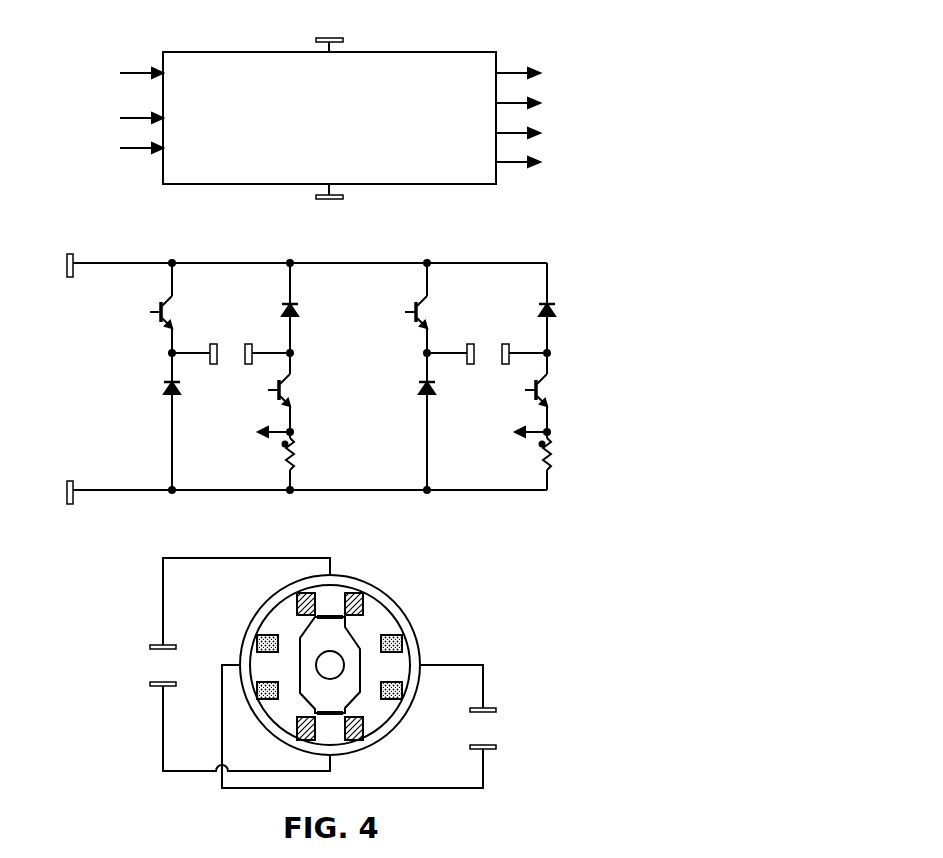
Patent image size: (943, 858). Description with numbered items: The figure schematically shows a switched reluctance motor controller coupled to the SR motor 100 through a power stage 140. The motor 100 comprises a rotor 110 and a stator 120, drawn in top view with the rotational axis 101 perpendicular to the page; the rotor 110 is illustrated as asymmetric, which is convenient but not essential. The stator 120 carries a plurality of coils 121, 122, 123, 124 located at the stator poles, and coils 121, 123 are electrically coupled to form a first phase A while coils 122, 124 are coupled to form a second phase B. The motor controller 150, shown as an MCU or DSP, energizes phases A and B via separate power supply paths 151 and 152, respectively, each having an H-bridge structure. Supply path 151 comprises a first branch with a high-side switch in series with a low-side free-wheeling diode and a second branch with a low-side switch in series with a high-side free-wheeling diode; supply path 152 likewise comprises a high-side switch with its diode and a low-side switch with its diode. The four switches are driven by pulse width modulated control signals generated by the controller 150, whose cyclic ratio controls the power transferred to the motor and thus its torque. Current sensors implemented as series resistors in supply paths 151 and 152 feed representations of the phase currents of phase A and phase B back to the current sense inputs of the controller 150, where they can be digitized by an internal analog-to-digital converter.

The SR motor 100 is at (317, 654).
The rotational axis 101 is at (330, 665).
The rotor 110 is at (320, 637).
The stator 120 is at (368, 588).
The coil 121 is at (305, 598).
The coil 122 is at (388, 638).
The coil 123 is at (352, 728).
The coil 124 is at (262, 688).
The power stage 140 is at (335, 398).
The motor controller 150 is at (193, 52).
The power supply path 151 is at (295, 499).
The power supply path 152 is at (552, 499).